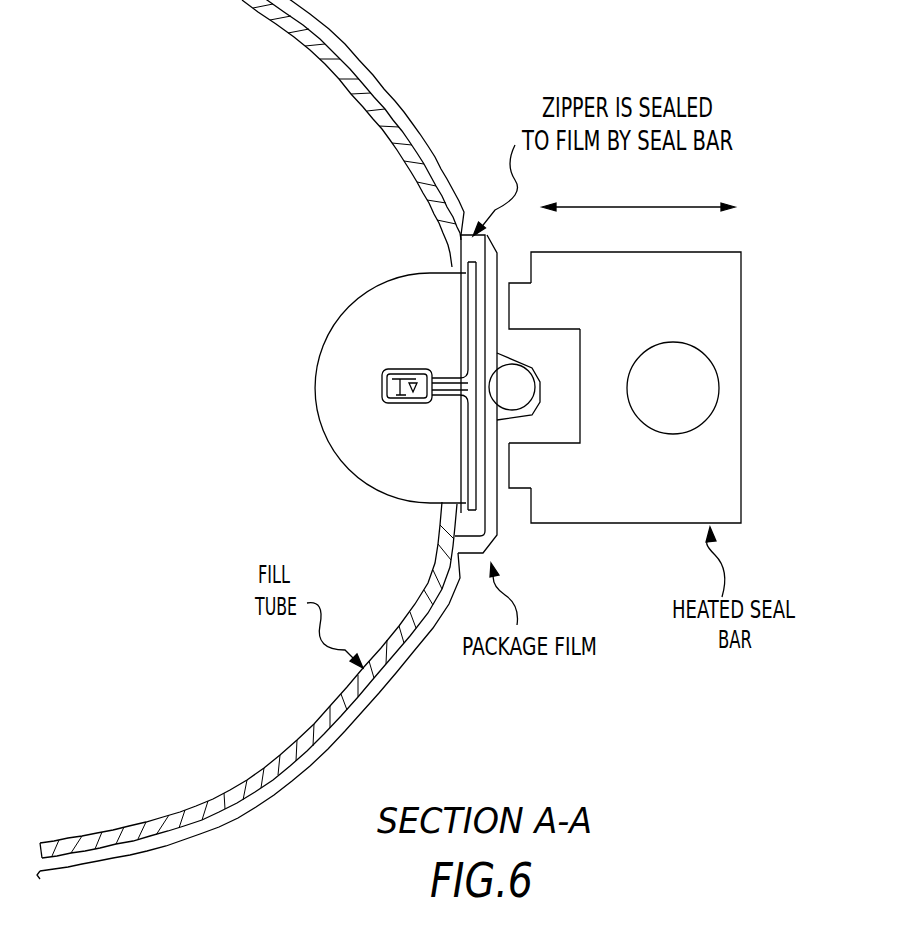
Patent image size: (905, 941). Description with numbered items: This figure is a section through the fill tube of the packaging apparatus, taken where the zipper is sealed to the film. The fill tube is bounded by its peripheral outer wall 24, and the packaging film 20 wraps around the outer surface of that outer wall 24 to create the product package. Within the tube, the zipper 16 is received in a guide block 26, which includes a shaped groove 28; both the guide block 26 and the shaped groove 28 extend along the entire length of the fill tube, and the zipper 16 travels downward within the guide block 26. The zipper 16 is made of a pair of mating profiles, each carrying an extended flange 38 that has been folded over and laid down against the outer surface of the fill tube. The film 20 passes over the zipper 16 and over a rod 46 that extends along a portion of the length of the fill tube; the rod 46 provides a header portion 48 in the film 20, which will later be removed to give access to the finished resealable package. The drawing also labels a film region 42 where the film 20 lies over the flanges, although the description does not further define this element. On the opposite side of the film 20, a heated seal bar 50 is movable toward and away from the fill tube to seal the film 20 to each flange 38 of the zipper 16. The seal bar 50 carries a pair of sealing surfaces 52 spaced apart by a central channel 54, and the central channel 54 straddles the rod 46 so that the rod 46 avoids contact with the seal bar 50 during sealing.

The zipper 16 is at (390, 405).
The packaging film 20 is at (376, 78).
The outer wall 24 is at (309, 50).
The guide block 26 is at (352, 317).
The shaped groove 28 is at (385, 380).
The flange 38 is at (466, 306).
The film seal region 42 is at (483, 260).
The rod 46 is at (513, 373).
The header portion 48 is at (543, 385).
The heated seal bar 50 is at (738, 292).
The sealing surfaces 52 is at (513, 305).
The central channel 54 is at (580, 412).